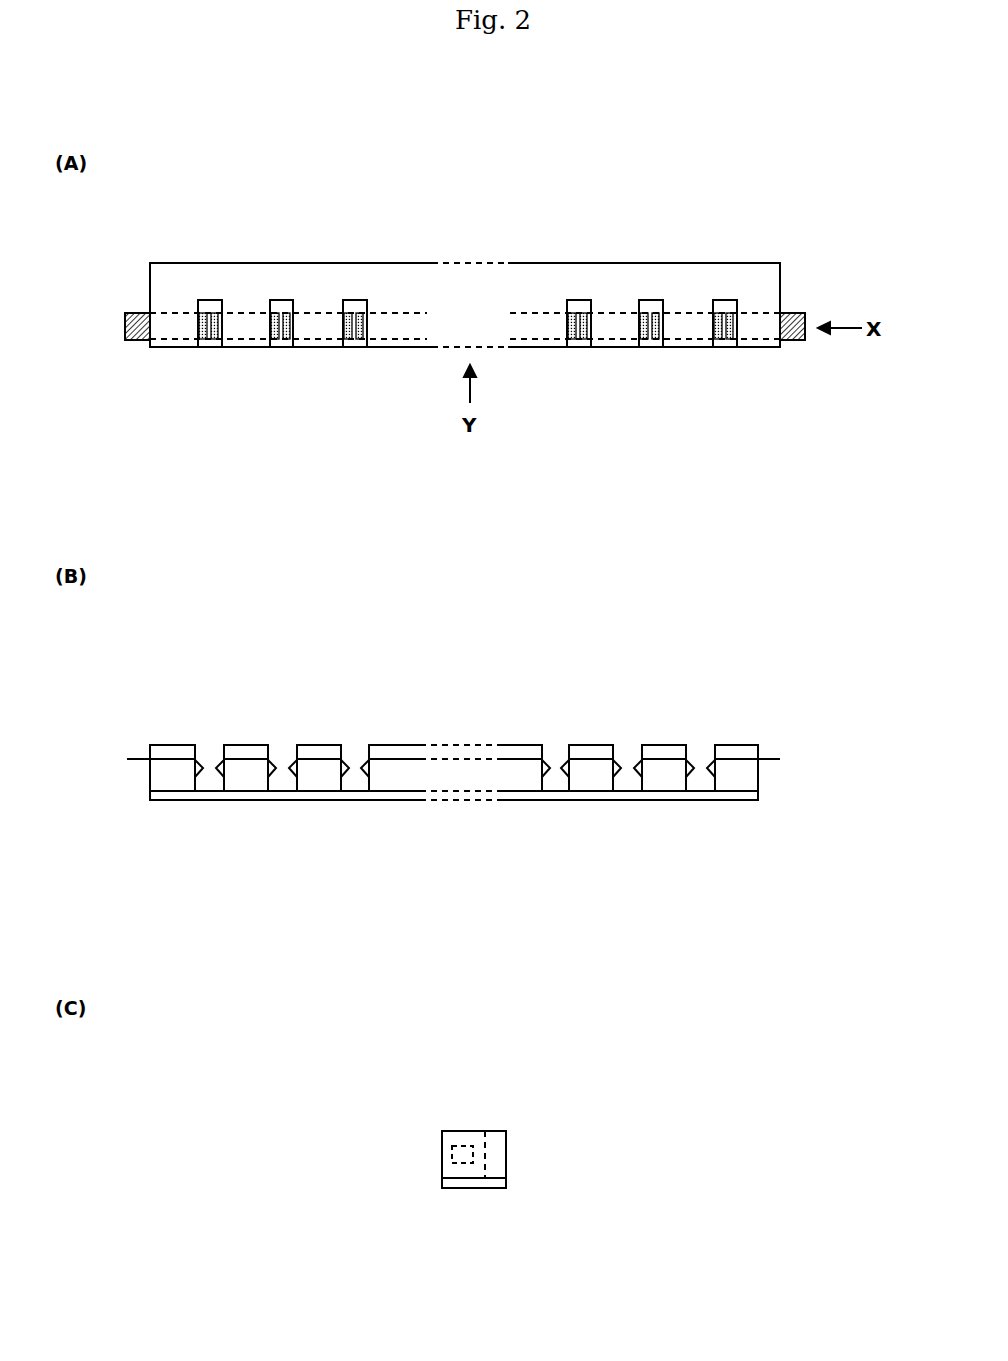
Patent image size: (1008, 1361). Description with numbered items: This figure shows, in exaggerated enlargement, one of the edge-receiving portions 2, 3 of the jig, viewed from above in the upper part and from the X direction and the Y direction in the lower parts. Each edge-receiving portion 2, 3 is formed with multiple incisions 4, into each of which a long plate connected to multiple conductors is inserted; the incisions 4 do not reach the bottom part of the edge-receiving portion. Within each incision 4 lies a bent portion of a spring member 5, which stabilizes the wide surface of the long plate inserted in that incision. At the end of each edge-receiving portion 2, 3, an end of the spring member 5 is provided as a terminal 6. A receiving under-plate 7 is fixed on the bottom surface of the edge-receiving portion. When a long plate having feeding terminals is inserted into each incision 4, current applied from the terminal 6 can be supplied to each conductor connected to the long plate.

The edge-receiving portion 2 is at (465, 676).
The edge-receiving portion 3 is at (495, 1131).
The incision 4 is at (208, 347).
The spring member 5 is at (222, 323).
The terminal 6 is at (138, 313).
The receiving under-plate 7 is at (217, 795).